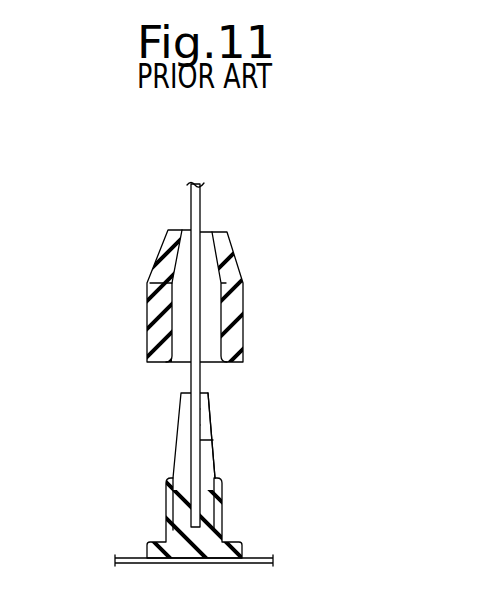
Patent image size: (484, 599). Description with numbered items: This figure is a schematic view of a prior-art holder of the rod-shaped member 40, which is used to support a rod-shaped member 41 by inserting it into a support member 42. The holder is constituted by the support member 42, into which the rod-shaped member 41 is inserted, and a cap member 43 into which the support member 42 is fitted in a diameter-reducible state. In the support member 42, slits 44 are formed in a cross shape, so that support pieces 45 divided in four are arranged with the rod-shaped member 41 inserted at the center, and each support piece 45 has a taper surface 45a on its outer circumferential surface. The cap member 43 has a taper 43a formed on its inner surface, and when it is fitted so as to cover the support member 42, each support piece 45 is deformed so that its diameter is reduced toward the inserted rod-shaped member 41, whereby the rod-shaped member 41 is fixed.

The holder of the rod-shaped member 40 is at (357, 328).
The rod-shaped member 41 is at (202, 208).
The support member 42 is at (207, 495).
The cap member 43 is at (235, 260).
The taper 43a is at (177, 246).
The slits 44 is at (200, 440).
The support pieces 45 is at (183, 437).
The taper surface 45a is at (213, 458).